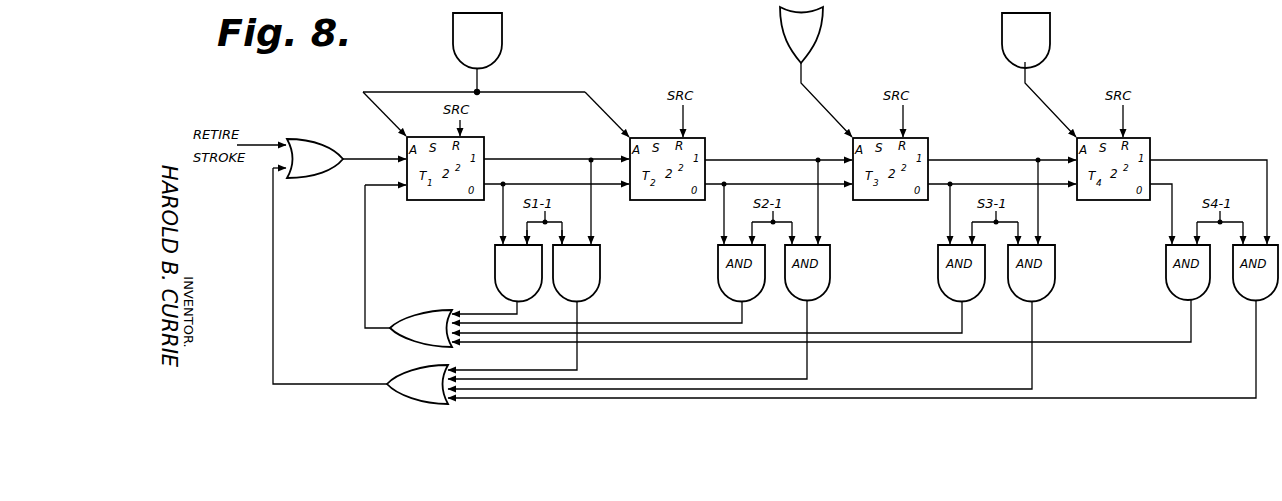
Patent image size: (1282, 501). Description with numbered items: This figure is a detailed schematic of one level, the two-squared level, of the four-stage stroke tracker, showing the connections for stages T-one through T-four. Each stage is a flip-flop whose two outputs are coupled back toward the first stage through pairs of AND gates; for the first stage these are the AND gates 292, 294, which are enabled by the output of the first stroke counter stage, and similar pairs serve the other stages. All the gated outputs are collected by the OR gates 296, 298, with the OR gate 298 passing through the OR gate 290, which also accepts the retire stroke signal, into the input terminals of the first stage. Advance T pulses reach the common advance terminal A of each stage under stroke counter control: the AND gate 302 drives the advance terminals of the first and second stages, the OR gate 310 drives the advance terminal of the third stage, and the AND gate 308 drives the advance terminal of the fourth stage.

The OR gate 290 is at (314, 137).
The AND gate 302 is at (502, 41).
The OR gate 310 is at (822, 32).
The AND gate 308 is at (1050, 34).
The AND gate 292 is at (495, 276).
The AND gate 294 is at (600, 292).
The OR gate 296 is at (426, 310).
The OR gate 298 is at (408, 367).